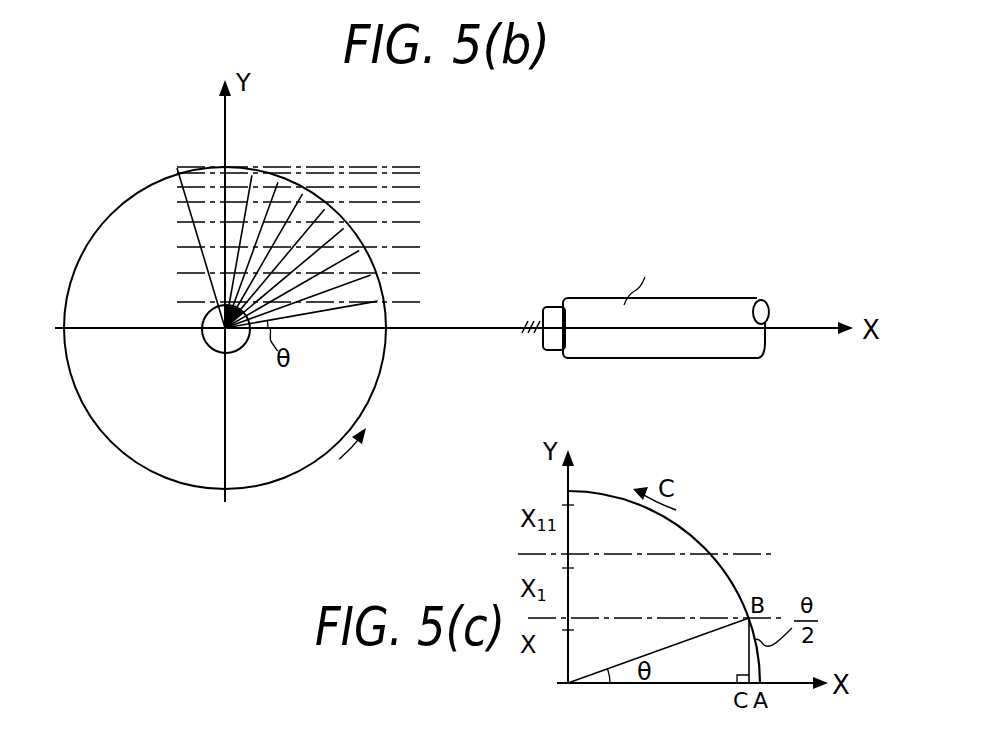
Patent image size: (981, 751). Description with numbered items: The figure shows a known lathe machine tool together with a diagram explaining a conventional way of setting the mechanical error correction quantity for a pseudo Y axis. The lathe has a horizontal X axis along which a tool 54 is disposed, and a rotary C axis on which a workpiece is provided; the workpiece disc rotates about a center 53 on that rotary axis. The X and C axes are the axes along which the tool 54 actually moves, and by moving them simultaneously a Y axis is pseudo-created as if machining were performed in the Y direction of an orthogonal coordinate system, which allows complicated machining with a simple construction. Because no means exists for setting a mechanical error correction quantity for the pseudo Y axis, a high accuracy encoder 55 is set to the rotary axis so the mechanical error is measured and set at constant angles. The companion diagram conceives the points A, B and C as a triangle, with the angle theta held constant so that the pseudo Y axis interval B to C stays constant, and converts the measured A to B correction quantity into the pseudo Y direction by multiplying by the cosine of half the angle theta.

The spindle center / rotation center 53 is at (217, 345).
The tool 54 is at (656, 350).
The high accuracy encoder 55 is at (235, 337).